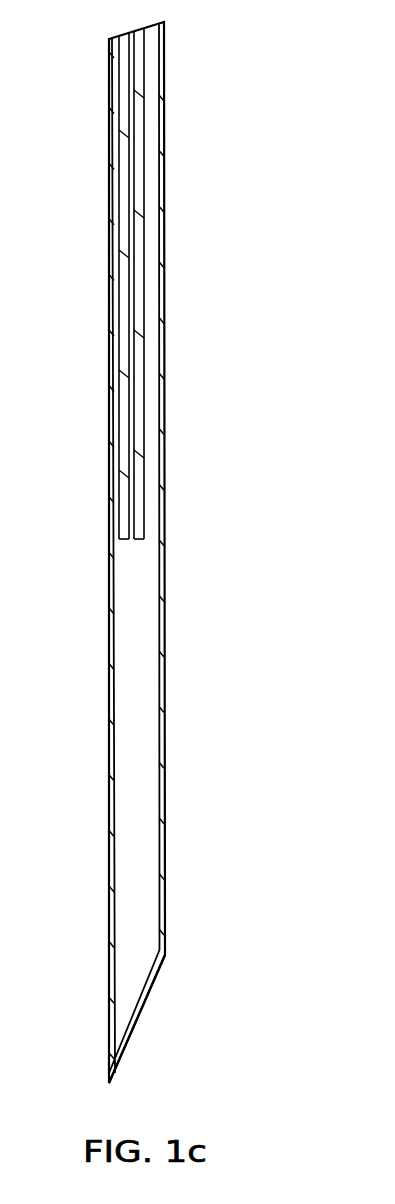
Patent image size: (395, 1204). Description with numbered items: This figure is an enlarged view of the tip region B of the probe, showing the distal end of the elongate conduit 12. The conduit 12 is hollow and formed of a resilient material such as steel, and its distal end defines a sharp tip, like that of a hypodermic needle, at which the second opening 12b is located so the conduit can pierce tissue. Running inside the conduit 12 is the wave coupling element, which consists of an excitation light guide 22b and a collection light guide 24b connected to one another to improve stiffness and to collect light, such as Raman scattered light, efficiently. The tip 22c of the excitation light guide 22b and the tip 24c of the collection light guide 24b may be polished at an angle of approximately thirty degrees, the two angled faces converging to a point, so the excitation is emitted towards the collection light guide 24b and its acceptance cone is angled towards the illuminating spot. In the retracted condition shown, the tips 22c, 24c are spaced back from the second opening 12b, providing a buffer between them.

The tip region B is at (175, 552).
The elongate conduit 12 is at (165, 343).
The second opening 12b is at (145, 1008).
The excitation light guide 22b is at (123, 432).
The tip of the excitation light guide 22c is at (125, 540).
The collection light guide 24b is at (140, 393).
The tip of the collection light guide 24c is at (138, 540).